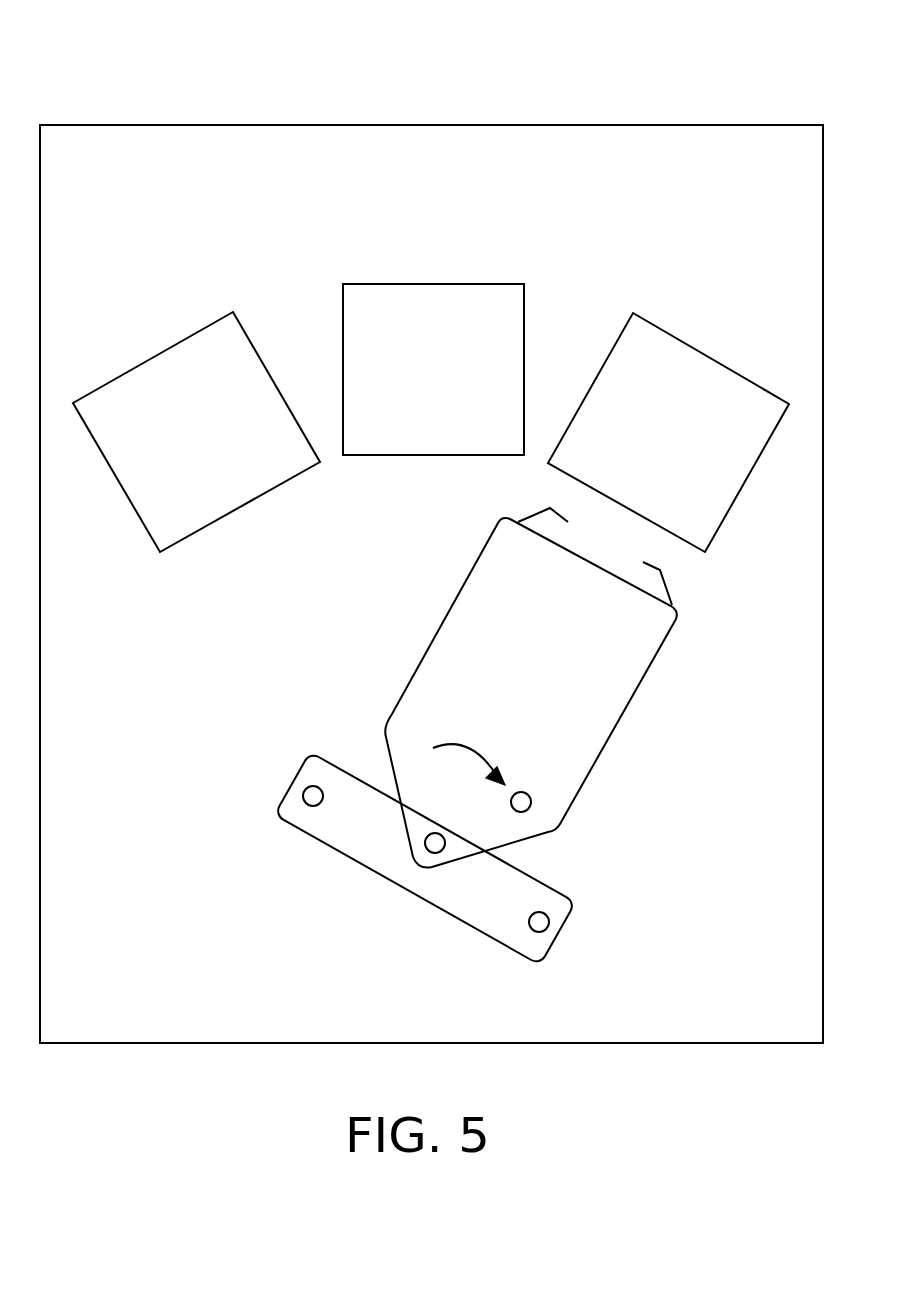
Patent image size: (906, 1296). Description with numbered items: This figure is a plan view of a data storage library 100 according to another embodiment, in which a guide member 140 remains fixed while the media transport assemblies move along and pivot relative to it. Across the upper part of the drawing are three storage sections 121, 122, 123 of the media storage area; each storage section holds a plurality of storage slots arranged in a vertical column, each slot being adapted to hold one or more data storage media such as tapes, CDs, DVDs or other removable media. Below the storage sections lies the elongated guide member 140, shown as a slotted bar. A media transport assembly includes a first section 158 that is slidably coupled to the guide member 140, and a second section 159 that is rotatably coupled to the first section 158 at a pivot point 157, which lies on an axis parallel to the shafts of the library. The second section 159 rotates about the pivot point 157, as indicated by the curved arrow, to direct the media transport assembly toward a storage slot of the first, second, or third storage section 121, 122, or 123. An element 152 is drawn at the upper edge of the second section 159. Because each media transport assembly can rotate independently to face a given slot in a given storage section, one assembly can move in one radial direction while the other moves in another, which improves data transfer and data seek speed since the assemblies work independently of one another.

The data storage library 100 is at (672, 92).
The first storage section 121 is at (214, 443).
The second storage section 122 is at (408, 383).
The third storage section 123 is at (647, 443).
The guide member 140 is at (360, 847).
The card 152 is at (670, 587).
The pivot point 157 is at (436, 846).
The first section 158 is at (557, 898).
The second section 159 is at (623, 703).